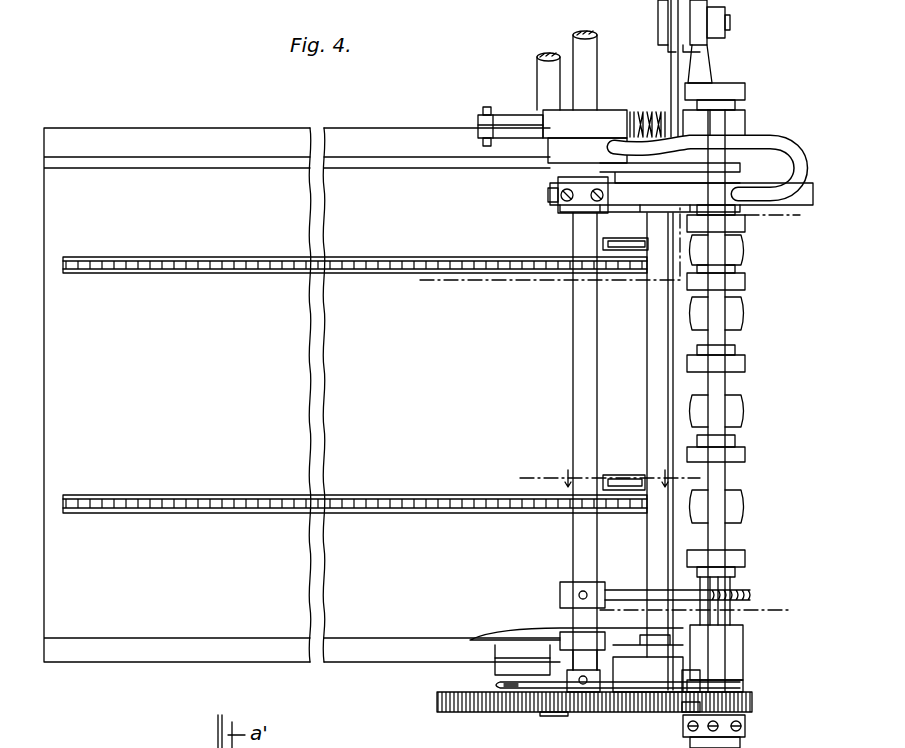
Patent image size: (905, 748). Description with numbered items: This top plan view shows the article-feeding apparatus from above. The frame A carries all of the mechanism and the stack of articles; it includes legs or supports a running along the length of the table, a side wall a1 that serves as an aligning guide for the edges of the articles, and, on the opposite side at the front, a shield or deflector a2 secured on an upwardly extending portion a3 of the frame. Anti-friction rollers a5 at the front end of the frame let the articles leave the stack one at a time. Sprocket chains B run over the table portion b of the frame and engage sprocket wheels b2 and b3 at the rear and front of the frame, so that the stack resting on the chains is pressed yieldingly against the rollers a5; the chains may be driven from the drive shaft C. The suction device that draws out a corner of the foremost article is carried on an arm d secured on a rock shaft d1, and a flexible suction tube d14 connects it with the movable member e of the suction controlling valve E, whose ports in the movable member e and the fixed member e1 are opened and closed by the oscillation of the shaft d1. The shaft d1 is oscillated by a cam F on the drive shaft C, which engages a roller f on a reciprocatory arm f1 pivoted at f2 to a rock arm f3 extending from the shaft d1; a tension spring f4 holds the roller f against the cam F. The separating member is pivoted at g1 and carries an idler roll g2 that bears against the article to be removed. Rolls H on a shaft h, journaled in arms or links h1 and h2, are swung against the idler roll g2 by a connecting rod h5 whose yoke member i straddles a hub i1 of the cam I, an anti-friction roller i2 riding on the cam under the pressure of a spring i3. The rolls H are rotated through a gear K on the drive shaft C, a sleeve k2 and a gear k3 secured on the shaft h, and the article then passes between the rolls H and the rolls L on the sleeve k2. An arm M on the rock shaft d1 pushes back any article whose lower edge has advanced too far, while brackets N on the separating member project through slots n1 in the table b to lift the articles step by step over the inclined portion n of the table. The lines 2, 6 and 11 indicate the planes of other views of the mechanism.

The frame A is at (302, 377).
The legs or supports a is at (381, 397).
The side wall a1 is at (380, 182).
The shield or deflector a2 is at (478, 638).
The upwardly extending portion a3 is at (545, 628).
The anti-friction rollers a5 is at (655, 366).
The sprocket chains B is at (426, 260).
The table portion b is at (166, 385).
The sprocket wheel b2 is at (100, 265).
The sprocket wheel b3 is at (622, 275).
The drive shaft C is at (540, 70).
The arm d is at (680, 195).
The rock shaft d1 is at (572, 380).
The suction tube d14 is at (770, 144).
The suction controlling valve E is at (604, 112).
The movable member e is at (587, 151).
The fixed member e1 is at (585, 124).
The cam F is at (514, 655).
The roller f is at (560, 688).
The reciprocatory arm f1 is at (613, 688).
The pivot f2 is at (686, 694).
The rock arm f3 is at (636, 692).
The tension spring f4 is at (498, 679).
The pivot g1 is at (705, 32).
The idler roll g2 is at (660, 402).
The rolls H is at (740, 278).
The shaft h is at (728, 336).
The arm or link h1 is at (745, 738).
The arm or link h2 is at (745, 98).
The connecting rod h5 is at (645, 112).
The cam I is at (505, 126).
The yoke member i is at (512, 150).
The hub i1 is at (525, 112).
The anti-friction roller i2 is at (480, 122).
The spring i3 is at (600, 153).
The gear K is at (472, 704).
The sleeve k2 is at (728, 478).
The gear k3 is at (745, 700).
The rolls L is at (745, 410).
The arm or member M is at (628, 585).
The brackets N is at (606, 244).
The inclined portion n is at (626, 329).
The slots n1 is at (618, 240).
The section line 2 is at (604, 252).
The section line 6 is at (699, 613).
The section line 11 is at (615, 480).